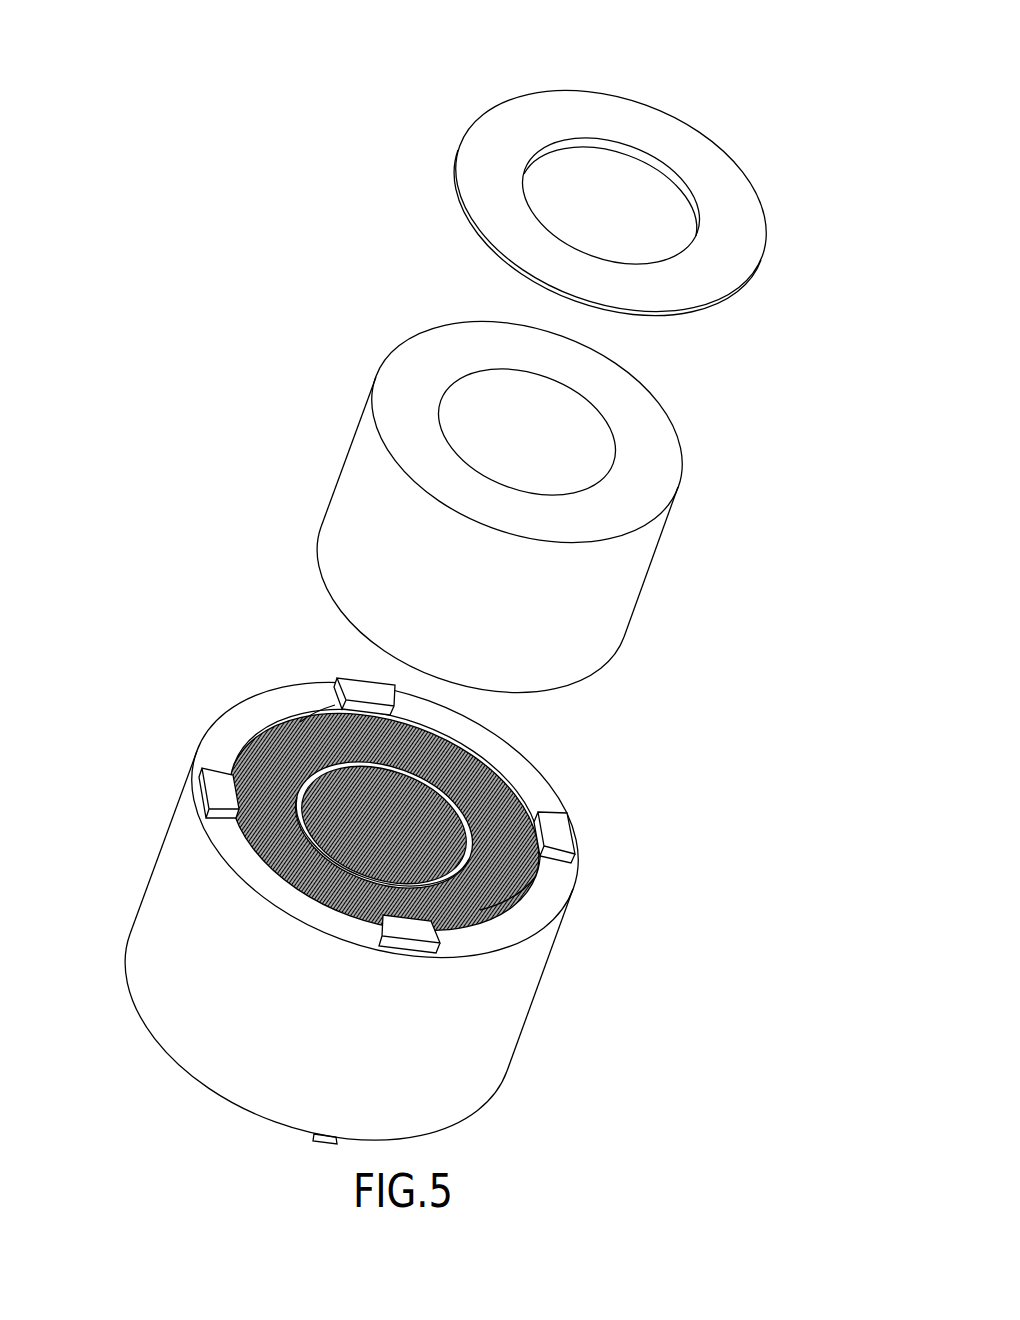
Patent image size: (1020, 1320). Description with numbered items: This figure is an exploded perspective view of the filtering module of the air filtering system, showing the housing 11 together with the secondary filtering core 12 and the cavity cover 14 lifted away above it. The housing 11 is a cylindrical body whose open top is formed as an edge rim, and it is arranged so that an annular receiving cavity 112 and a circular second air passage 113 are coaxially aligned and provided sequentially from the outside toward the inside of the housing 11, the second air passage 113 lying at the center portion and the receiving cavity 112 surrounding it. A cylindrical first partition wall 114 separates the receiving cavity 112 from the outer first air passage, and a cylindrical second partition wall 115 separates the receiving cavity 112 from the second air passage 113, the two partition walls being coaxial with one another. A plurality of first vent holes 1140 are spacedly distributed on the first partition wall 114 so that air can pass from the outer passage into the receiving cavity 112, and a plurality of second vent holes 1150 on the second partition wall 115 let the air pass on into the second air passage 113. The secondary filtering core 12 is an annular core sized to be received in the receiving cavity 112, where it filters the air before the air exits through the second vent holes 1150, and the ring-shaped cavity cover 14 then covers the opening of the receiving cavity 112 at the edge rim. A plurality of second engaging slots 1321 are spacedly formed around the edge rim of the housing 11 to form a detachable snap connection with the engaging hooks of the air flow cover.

The housing 11 is at (148, 798).
The secondary filtering core 12 is at (335, 390).
The cavity cover 14 is at (440, 123).
The receiving cavity 112 is at (533, 837).
The second air passage 113 is at (535, 873).
The first partition wall 114 is at (422, 738).
The second partition wall 115 is at (310, 727).
The first vent hole 1140 is at (460, 765).
The second vent hole 1150 is at (447, 807).
The second engaging slot 1321 is at (420, 943).